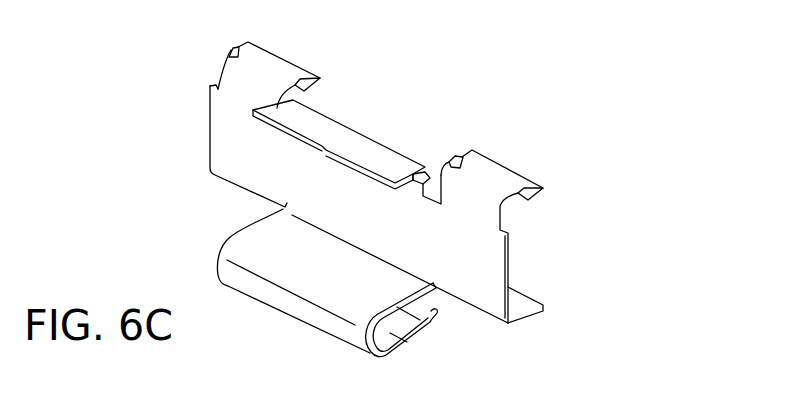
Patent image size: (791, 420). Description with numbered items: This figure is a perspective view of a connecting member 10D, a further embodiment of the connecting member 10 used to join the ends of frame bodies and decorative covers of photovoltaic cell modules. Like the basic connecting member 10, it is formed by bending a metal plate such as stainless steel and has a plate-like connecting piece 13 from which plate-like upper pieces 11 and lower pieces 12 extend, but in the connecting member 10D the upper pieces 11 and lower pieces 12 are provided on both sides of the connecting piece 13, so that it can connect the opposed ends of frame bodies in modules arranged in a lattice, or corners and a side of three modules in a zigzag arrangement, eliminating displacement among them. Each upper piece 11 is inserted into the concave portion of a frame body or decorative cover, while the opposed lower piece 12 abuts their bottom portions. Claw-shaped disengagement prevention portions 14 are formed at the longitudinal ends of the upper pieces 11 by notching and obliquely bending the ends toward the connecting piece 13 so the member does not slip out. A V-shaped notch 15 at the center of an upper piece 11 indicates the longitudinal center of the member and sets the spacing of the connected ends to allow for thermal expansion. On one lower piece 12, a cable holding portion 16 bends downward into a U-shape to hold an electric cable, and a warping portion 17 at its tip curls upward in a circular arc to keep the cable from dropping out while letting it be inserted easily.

The connecting member 10D is at (437, 76).
The connecting member 10 is at (382, 206).
The upper piece 11 is at (283, 65).
The lower piece 12 is at (393, 301).
The connecting piece 13 is at (228, 150).
The disengagement prevention portion 14 is at (228, 54).
The notch 15 is at (328, 158).
The cable holding portion 16 is at (397, 338).
The warping portion 17 is at (438, 314).